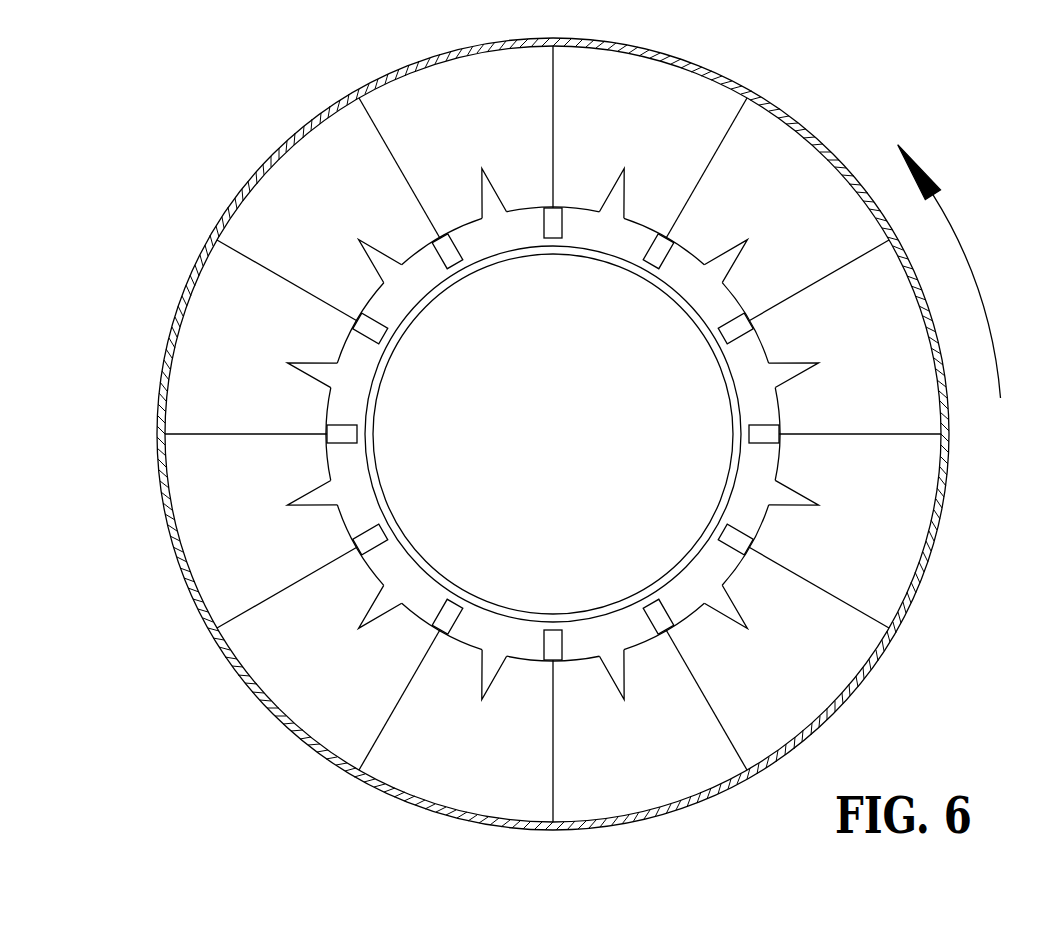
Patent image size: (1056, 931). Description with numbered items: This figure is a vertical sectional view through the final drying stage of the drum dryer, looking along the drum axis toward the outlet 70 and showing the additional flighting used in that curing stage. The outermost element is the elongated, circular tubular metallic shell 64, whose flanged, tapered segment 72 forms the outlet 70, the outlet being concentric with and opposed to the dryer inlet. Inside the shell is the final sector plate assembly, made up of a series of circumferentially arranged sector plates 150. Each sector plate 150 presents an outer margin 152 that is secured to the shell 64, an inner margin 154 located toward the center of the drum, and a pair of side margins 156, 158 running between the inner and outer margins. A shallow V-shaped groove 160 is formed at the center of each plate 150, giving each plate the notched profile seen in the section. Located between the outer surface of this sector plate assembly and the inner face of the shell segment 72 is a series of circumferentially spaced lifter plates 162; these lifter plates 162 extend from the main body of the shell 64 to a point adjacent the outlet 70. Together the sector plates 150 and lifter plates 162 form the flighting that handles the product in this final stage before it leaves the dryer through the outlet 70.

The shell 64 is at (298, 136).
The outlet 70 is at (588, 435).
The tapered segment 72 is at (632, 240).
The sector plates 150 is at (815, 672).
The outer margin 152 is at (933, 558).
The inner margin 154 is at (778, 460).
The side margin 156 is at (842, 600).
The side margin 158 is at (895, 440).
The V-shaped groove 160 is at (718, 605).
The lifter plates 162 is at (550, 226).